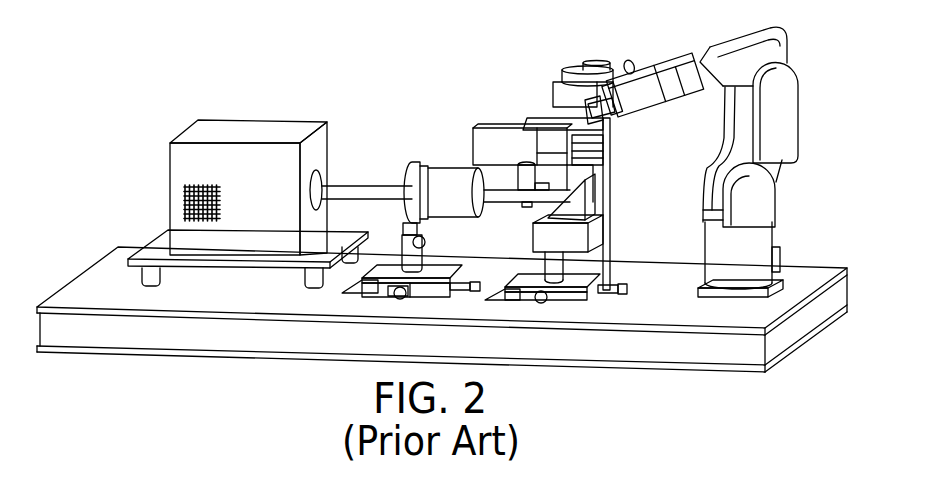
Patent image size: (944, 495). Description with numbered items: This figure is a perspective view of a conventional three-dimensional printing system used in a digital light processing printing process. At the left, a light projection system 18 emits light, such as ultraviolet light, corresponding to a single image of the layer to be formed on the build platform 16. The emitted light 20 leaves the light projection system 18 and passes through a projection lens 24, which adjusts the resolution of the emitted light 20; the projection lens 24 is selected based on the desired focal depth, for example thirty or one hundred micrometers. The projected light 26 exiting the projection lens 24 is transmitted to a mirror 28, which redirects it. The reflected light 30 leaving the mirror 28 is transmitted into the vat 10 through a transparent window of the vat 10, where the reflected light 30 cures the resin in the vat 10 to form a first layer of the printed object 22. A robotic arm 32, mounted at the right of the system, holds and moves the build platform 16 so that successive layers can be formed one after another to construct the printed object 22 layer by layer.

The vat 10 is at (533, 117).
The build platform 16 is at (602, 63).
The light projection system 18 is at (170, 161).
The emitted light 20 is at (365, 186).
The printed object 22 is at (613, 113).
The projection lens 24 is at (437, 167).
The projected light 26 is at (495, 202).
The mirror 28 is at (586, 204).
The reflected light 30 is at (610, 150).
The robotic arm 32 is at (665, 45).